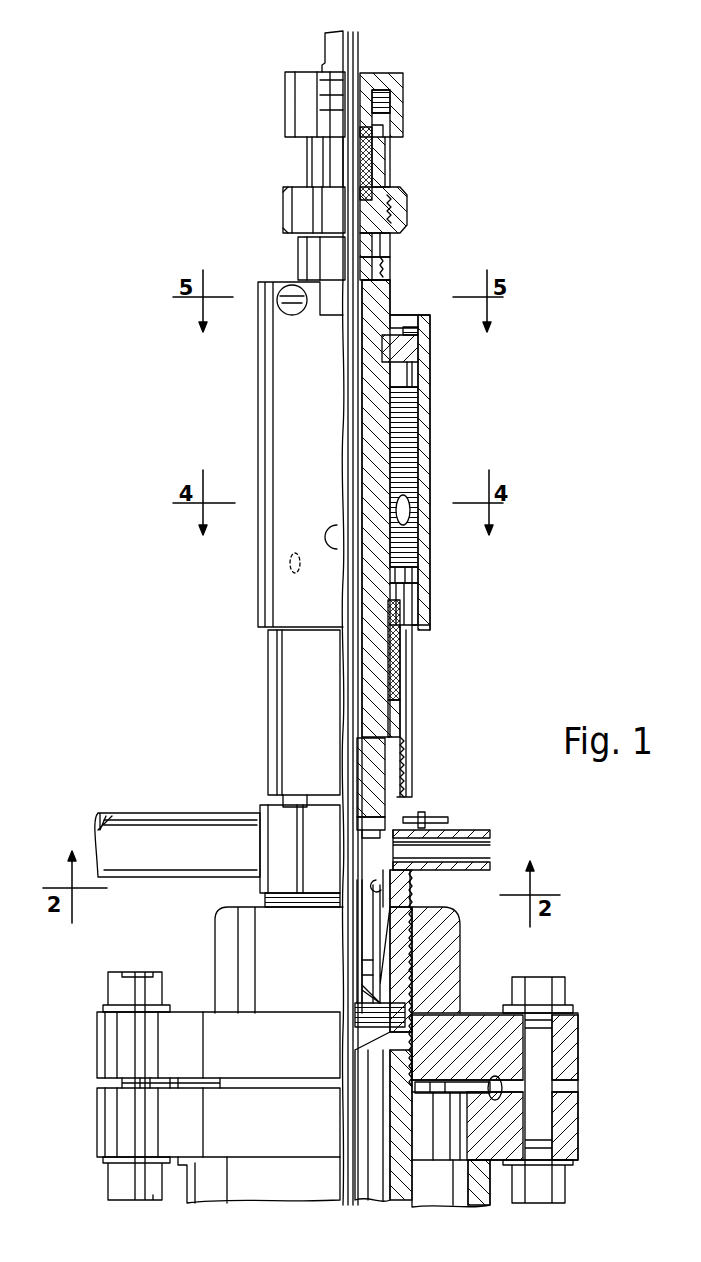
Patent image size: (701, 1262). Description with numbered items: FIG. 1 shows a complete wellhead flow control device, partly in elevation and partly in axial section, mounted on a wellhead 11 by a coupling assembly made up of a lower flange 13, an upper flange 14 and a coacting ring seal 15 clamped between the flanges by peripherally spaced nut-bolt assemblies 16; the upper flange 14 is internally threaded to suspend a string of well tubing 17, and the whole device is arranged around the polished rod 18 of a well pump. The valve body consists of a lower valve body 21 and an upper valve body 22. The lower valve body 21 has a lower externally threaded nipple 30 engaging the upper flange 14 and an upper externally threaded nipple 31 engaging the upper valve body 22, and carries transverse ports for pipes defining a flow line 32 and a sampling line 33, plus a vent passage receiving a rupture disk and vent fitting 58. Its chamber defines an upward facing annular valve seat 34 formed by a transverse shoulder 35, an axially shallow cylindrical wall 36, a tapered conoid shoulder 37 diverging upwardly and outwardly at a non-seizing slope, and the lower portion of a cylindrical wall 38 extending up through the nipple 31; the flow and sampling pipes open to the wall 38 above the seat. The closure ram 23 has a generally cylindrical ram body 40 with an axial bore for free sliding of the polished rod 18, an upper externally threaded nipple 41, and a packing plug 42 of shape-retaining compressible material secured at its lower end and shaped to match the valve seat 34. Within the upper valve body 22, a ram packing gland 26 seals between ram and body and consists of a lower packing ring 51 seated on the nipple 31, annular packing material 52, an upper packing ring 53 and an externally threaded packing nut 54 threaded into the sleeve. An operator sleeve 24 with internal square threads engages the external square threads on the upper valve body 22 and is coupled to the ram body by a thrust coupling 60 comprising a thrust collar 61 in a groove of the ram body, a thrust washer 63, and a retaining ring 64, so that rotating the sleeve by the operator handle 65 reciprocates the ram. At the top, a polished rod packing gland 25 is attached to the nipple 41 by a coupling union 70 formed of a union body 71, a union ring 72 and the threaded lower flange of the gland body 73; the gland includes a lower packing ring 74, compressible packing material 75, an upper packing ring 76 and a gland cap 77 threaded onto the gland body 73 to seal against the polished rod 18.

The wellhead 11 is at (180, 1203).
The lower flange 13 is at (105, 1110).
The upper flange 14 is at (105, 1040).
The ring seal 15 is at (502, 1088).
The nut-bolt assemblies 16 is at (548, 1045).
The well tubing 17 is at (375, 1192).
The polished rod 18 is at (332, 43).
The lower valve body 21 is at (262, 806).
The upper valve body 22 is at (266, 703).
The ram 23 is at (380, 421).
The operator sleeve 24 is at (256, 418).
The polished rod packing gland 25 is at (296, 157).
The ram packing gland 26 is at (424, 647).
The lower externally threaded nipple 30 is at (395, 970).
The upper externally threaded nipple 31 is at (405, 770).
The flow line 32 is at (137, 820).
The sampling line 33 is at (480, 850).
The valve seat 34 is at (366, 935).
The transverse shoulder 35 is at (363, 960).
The cylindrical wall 36 is at (380, 952).
The conoid shoulder 37 is at (380, 923).
The cylindrical wall 38 is at (392, 887).
The ram body 40 is at (380, 467).
The externally threaded nipple 41 is at (380, 268).
The packing plug 42 is at (378, 750).
The lower packing ring 51 is at (400, 713).
The packing material 52 is at (398, 665).
The upper packing ring 53 is at (410, 600).
The packing nut 54 is at (413, 568).
The rupture disk and vent fitting 58 is at (430, 818).
The thrust coupling 60 is at (408, 322).
The thrust collar 61 is at (418, 348).
The thrust washer 63 is at (412, 368).
The retaining ring 64 is at (417, 325).
The operator handle 65 is at (292, 305).
The coupling union 70 is at (281, 220).
The union body 71 is at (303, 258).
The union ring 72 is at (410, 200).
The gland body 73 is at (385, 148).
The lower packing ring 74 is at (385, 245).
The packing material 75 is at (372, 165).
The upper packing ring 76 is at (368, 80).
The gland cap 77 is at (302, 100).